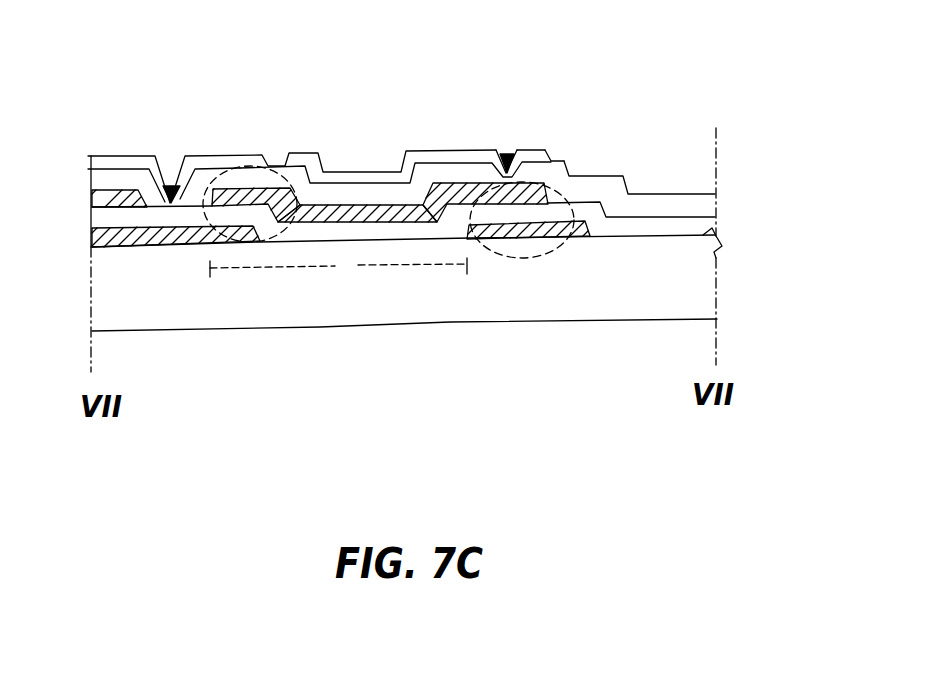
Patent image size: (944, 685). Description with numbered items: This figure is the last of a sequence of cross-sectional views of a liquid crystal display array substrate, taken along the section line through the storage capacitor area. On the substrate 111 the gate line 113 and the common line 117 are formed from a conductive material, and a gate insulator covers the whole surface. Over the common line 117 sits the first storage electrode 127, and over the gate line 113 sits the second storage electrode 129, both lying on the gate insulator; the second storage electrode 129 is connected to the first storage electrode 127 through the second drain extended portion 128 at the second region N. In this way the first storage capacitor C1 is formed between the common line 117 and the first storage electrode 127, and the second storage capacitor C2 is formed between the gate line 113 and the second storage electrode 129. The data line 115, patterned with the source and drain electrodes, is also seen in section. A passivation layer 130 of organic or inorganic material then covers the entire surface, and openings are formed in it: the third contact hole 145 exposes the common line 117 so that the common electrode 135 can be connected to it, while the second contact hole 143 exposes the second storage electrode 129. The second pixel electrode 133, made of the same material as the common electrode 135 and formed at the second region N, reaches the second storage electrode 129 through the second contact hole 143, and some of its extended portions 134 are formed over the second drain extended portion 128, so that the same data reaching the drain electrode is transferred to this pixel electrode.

The substrate 111 is at (430, 306).
The gate line 113 is at (532, 243).
The data line 115 is at (117, 192).
The common line 117 is at (187, 245).
The first storage electrode 127 is at (262, 185).
The second drain extended portion 128 is at (355, 198).
The second storage electrode 129 is at (547, 184).
The passivation layer 130 is at (148, 167).
The second pixel electrode 133 is at (546, 152).
The extended portions of second pixel electrode 134 is at (325, 165).
The common electrode 135 is at (238, 166).
The second contact hole 143 is at (508, 155).
The third contact hole 145 is at (172, 187).
The first storage capacitor C1 is at (288, 245).
The second storage capacitor C2 is at (558, 247).
The second region N is at (338, 268).